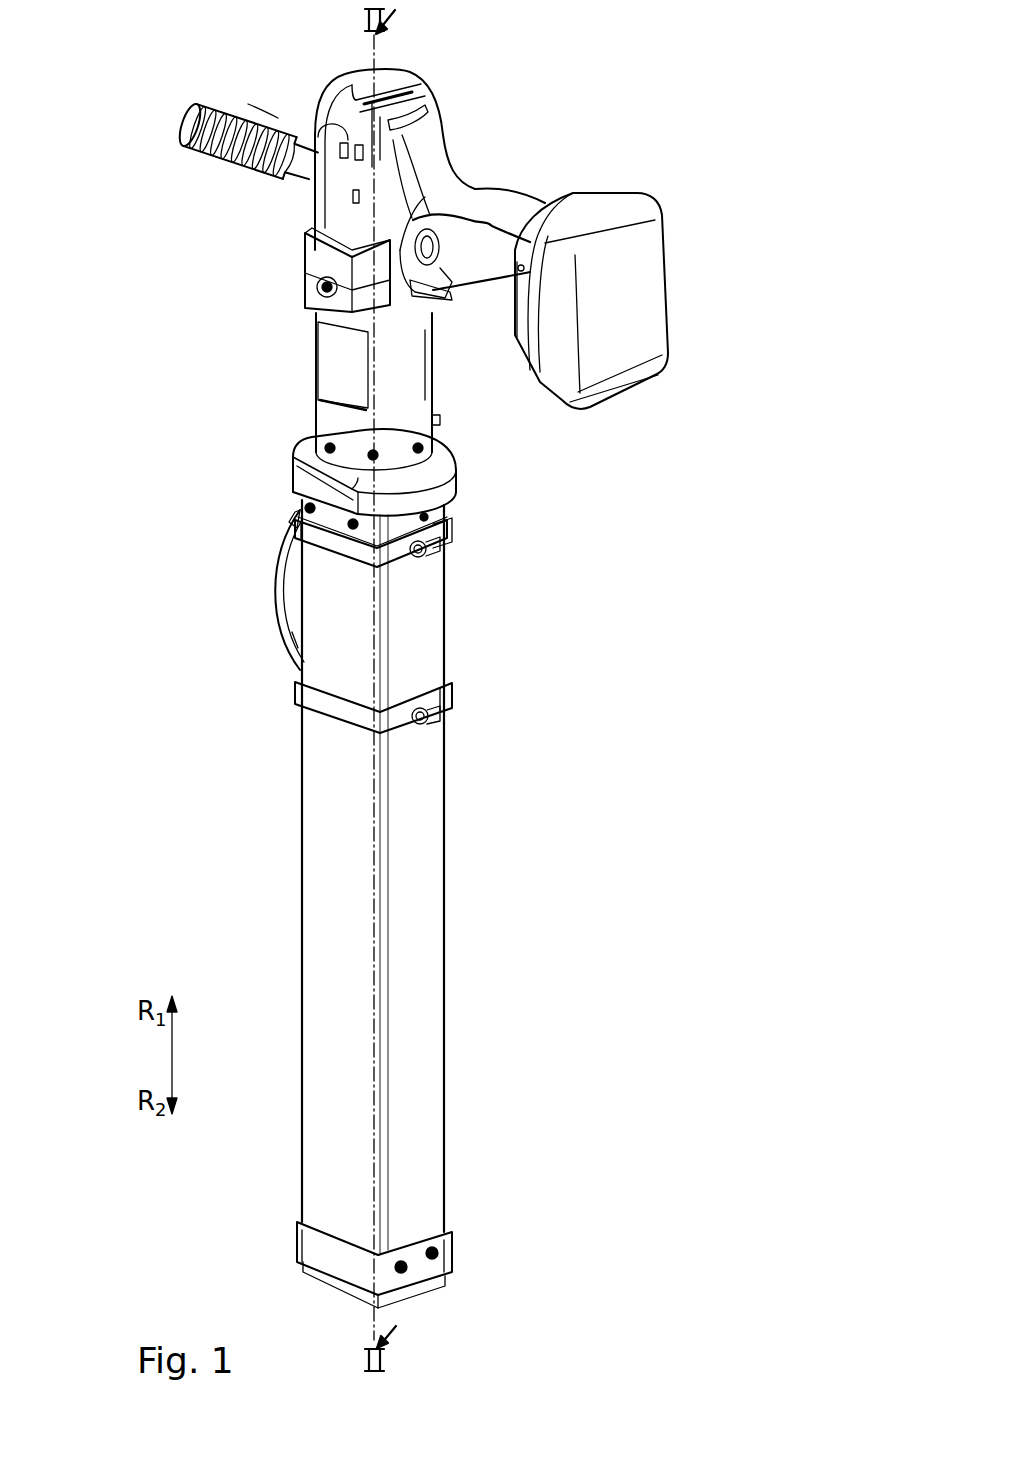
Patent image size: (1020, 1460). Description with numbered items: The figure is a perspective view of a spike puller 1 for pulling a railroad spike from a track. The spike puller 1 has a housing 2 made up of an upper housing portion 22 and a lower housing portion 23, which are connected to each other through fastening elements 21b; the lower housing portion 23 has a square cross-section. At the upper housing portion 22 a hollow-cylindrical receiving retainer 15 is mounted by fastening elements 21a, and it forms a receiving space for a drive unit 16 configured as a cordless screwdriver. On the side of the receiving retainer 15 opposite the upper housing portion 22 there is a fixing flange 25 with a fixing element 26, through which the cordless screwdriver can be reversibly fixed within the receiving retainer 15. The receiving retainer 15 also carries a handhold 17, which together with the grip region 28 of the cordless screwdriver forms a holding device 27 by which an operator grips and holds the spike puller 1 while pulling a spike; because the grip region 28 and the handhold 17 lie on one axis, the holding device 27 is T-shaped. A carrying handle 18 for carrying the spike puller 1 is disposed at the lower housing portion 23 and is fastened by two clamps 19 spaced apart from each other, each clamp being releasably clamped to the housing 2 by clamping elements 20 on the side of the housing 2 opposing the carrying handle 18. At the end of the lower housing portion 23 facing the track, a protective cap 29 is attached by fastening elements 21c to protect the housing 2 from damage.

The spike puller 1 is at (620, 935).
The housing 2 is at (300, 797).
The receiving retainer 15 is at (310, 406).
The drive unit 16 is at (626, 192).
The handhold 17 is at (204, 105).
The carrying handle 18 is at (288, 571).
The clamps 19 is at (455, 535).
The clamping elements 20 is at (430, 556).
The fastening elements 21a is at (378, 458).
The fastening elements 21b is at (350, 524).
The fastening elements 21c is at (408, 1266).
The upper housing portion 22 is at (298, 480).
The lower housing portion 23 is at (328, 935).
The fixing flange 25 is at (316, 255).
The fixing element 26 is at (356, 90).
The holding device 27 is at (232, 110).
The grip region 28 is at (484, 200).
The protective cap 29 is at (312, 1247).